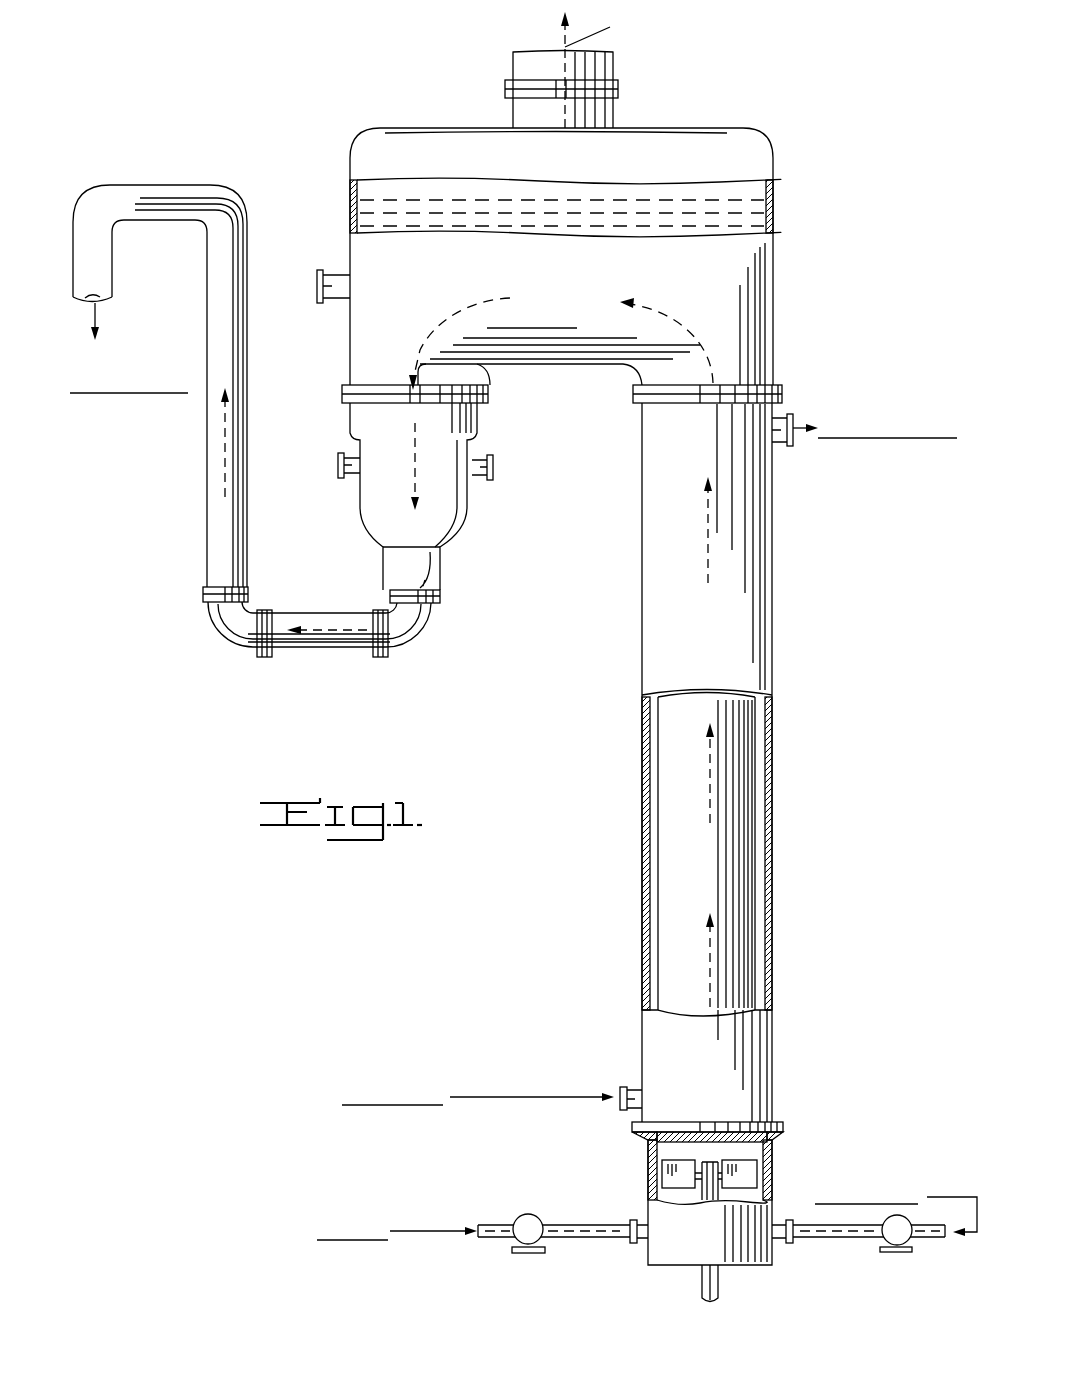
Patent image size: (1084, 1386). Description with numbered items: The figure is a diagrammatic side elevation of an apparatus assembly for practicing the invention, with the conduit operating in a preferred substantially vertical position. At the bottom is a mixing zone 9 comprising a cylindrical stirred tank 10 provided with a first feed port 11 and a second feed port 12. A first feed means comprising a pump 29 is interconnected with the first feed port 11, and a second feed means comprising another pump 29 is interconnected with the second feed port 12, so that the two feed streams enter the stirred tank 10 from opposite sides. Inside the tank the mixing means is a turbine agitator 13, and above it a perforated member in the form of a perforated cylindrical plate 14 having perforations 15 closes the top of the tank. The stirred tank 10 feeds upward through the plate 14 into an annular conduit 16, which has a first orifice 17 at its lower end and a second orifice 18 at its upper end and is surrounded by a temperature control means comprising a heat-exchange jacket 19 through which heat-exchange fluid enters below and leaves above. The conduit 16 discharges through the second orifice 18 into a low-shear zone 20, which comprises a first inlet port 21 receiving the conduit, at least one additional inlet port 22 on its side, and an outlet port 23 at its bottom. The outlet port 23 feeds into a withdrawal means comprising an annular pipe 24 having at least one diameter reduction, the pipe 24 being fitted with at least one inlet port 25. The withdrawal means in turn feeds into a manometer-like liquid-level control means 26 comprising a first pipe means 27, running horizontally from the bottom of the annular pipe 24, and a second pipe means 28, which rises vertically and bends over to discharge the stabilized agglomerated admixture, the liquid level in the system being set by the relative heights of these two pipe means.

The mixing zone 9 is at (680, 1285).
The cylindrical stirred tank 10 is at (770, 1265).
The first feed port 11 is at (780, 1220).
The second feed port 12 is at (645, 1245).
The turbine agitator 13 is at (707, 1183).
The perforated cylindrical plate 14 is at (740, 1146).
The perforations 15 is at (695, 1132).
The annular conduit 16 is at (757, 798).
The first orifice 17 is at (730, 1122).
The second orifice 18 is at (664, 762).
The heat-exchange jacket 19 is at (640, 647).
The low-shear zone 20 is at (715, 130).
The first inlet port 21 is at (733, 385).
The additional inlet port 22 is at (330, 270).
The outlet port 23 is at (378, 385).
The annular pipe 24 is at (398, 497).
The inlet port 25 is at (350, 452).
The manometer-like liquid-level control means 26 is at (280, 657).
The first pipe means 27 is at (215, 665).
The second pipe means 28 is at (207, 467).
The pump 29 is at (515, 1240).